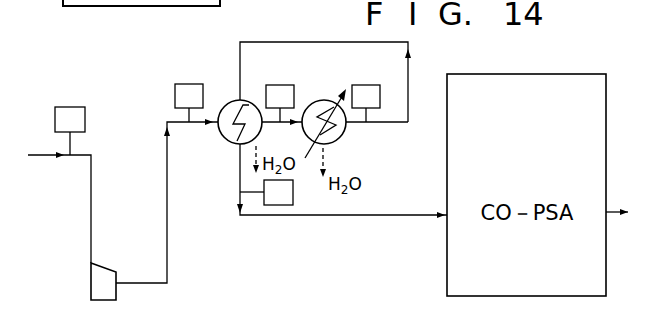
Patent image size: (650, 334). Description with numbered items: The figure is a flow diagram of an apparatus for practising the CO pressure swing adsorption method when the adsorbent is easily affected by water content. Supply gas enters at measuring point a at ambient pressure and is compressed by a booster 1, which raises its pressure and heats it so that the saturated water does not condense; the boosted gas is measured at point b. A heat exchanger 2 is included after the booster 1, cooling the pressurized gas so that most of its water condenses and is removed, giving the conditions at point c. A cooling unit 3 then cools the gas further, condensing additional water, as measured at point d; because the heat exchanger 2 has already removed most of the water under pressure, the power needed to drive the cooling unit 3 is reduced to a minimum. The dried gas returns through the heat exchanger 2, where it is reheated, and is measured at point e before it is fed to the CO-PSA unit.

The booster 1 is at (118, 301).
The heat exchanger 2 is at (219, 131).
The cooling unit 3 is at (343, 137).
The measuring point a is at (70, 131).
The measuring point b is at (189, 103).
The measuring point c is at (280, 103).
The measuring point d is at (366, 103).
The measuring point e is at (266, 193).